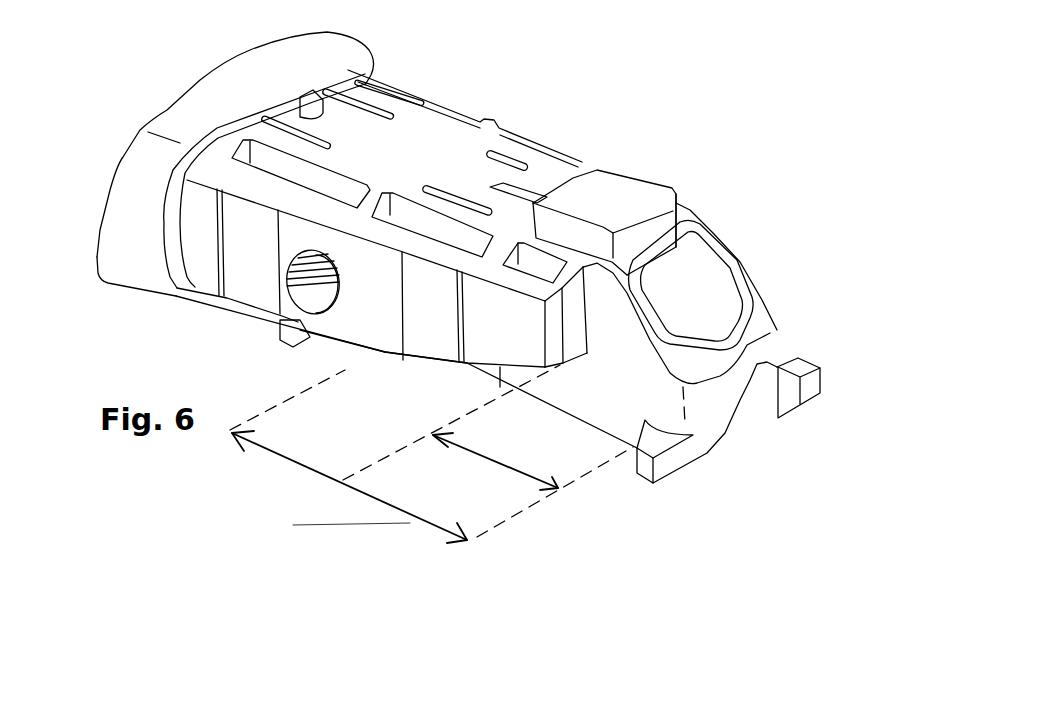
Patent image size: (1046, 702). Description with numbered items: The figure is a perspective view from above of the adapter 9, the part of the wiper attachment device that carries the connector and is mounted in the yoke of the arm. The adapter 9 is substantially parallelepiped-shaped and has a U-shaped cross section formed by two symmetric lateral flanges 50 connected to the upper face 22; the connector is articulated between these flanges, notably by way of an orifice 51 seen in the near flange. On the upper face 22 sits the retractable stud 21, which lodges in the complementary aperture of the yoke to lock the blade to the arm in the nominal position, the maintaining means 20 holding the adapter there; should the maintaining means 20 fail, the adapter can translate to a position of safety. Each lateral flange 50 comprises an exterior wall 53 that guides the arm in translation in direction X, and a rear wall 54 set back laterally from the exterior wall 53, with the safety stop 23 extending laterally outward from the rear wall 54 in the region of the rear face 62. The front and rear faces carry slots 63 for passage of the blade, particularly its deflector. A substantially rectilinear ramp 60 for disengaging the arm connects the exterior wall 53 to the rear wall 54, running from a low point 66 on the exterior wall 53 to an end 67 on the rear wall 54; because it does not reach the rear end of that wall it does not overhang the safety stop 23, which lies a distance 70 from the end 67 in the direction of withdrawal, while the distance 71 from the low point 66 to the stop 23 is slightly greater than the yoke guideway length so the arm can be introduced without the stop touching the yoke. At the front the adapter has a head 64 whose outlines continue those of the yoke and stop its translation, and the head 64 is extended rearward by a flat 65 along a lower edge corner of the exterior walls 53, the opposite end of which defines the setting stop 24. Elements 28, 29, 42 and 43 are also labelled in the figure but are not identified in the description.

The adapter 9 is at (643, 70).
The maintaining means 20 is at (575, 112).
The stud 21 is at (620, 190).
The upper face 22 is at (420, 137).
The safety stop 23 is at (635, 463).
The setting stop 24 is at (299, 341).
The opening 28 is at (543, 186).
The recess 29 is at (648, 243).
The side face of latch block 42 is at (650, 212).
The top face of latch block 43 is at (580, 180).
The lateral flanges 50 is at (167, 305).
The orifice 51 is at (318, 287).
The exterior wall 53 is at (373, 320).
The rear wall 54 is at (555, 388).
The ramp 60 is at (432, 374).
The rear face 62 is at (793, 347).
The slots 63 is at (759, 388).
The head 64 is at (173, 68).
The flat 65 is at (213, 305).
The low point 66 is at (380, 360).
The end 67 is at (583, 352).
The distance 70 is at (493, 458).
The distance 71 is at (367, 497).